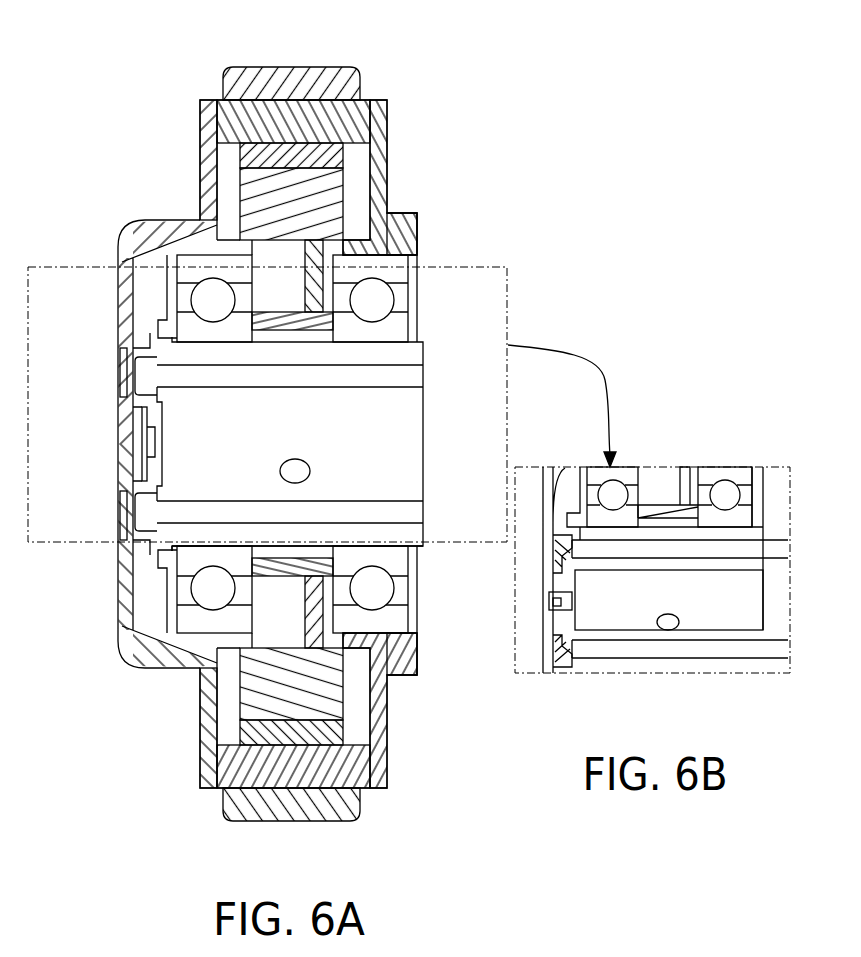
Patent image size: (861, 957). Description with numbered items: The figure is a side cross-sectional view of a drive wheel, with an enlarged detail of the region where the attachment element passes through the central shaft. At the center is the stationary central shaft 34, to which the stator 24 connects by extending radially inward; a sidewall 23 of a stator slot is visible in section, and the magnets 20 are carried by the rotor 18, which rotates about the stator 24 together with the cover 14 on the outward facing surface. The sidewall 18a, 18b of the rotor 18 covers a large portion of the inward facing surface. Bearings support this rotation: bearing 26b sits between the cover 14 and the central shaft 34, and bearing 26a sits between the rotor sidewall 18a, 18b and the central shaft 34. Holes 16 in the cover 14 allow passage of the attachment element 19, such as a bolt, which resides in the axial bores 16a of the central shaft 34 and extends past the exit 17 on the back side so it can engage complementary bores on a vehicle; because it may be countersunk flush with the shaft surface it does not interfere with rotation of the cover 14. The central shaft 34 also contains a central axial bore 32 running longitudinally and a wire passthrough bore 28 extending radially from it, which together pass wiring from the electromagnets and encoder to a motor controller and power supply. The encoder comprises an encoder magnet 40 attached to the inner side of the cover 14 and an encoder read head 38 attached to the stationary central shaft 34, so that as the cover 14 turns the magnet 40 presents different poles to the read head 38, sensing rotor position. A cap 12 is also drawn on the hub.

In FIG. 6A, the cap nut 12 is at (313, 75).
In FIG. 6A, the cover 14 is at (150, 230).
In FIG. 6A, the holes 16 is at (100, 361).
In FIG. 6A, the axial bores 16a is at (197, 374).
In FIG. 6A, the exit point 17 is at (434, 375).
In FIG. 6B, the exit point 17 is at (757, 660).
In FIG. 6A, the rotor 18 is at (390, 117).
In FIG. 6A, the sidewall 18a is at (317, 118).
In FIG. 6A, the sidewall 18b is at (417, 245).
In FIG. 6B, the attachment element 19 is at (553, 580).
In FIG. 6A, the magnets 20 is at (338, 153).
In FIG. 6A, the sidewall 23 is at (323, 200).
In FIG. 6A, the stator 24 is at (333, 330).
In FIG. 6A, the bearing 26a is at (207, 607).
In FIG. 6B, the bearing 26a is at (612, 497).
In FIG. 6A, the bearing 26b is at (380, 300).
In FIG. 6B, the bearing 26b is at (725, 497).
In FIG. 6A, the wire passthrough bore 28 is at (300, 462).
In FIG. 6B, the wire passthrough bore 28 is at (669, 600).
In FIG. 6A, the central axial bore 32 is at (117, 508).
In FIG. 6A, the central shaft 34 is at (397, 530).
In FIG. 6B, the central shaft 34 is at (757, 535).
In FIG. 6A, the encoder read head 38 is at (120, 415).
In FIG. 6A, the encoder magnet 40 is at (117, 440).
In FIG. 6B, the encoder magnet 40 is at (560, 601).